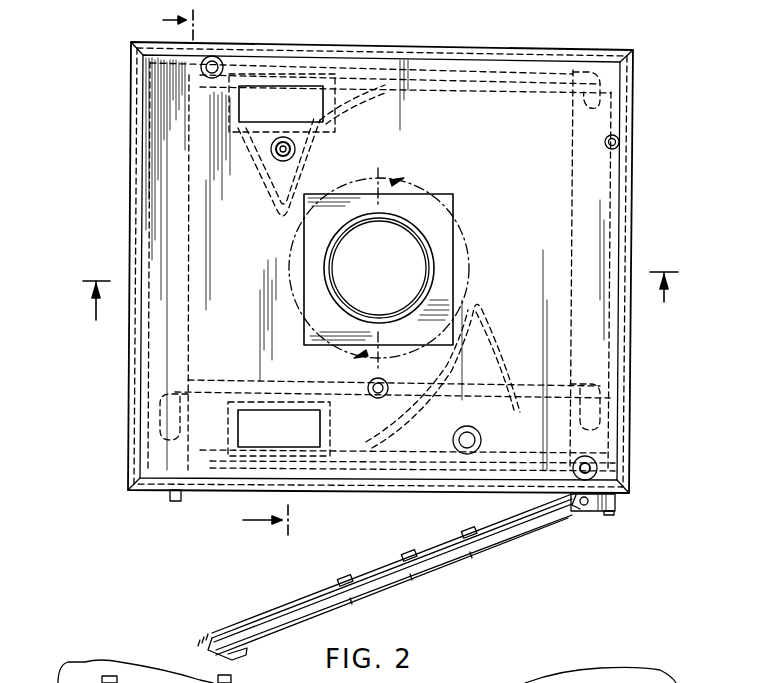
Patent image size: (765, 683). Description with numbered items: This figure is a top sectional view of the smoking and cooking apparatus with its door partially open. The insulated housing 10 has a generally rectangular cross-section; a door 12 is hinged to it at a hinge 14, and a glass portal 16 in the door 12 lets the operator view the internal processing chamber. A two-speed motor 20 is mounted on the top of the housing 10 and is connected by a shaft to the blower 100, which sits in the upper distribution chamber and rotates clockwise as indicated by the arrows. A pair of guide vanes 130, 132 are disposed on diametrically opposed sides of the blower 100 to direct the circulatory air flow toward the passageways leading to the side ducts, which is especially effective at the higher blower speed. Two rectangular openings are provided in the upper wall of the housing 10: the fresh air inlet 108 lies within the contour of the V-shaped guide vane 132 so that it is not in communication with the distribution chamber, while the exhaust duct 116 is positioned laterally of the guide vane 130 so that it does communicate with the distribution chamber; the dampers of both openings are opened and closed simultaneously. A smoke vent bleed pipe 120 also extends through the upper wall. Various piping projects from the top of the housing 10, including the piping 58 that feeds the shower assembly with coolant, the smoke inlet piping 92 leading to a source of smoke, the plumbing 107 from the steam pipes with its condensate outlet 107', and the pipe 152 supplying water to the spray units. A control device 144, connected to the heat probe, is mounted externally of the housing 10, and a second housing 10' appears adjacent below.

The housing 10 is at (364, 274).
The second display panel assembly 10' is at (363, 653).
The door 12 is at (478, 552).
The hinge 14 is at (586, 508).
The glass portal 16 is at (404, 575).
The two-speed motor 20 is at (417, 258).
The piping 58 is at (598, 468).
The smoke inlet piping 92 is at (270, 152).
The blower 100 is at (420, 192).
The plumbing 107 is at (400, 379).
The condensate outlet 107' is at (232, 44).
The fresh air inlet 108 is at (273, 93).
The exhaust duct 116 is at (245, 412).
The smoke vent bleed pipe 120 is at (467, 454).
The guide vane 130 is at (488, 340).
The V-shaped guide vane 132 is at (268, 182).
The control device 144 is at (616, 505).
The pipe 152 is at (620, 141).